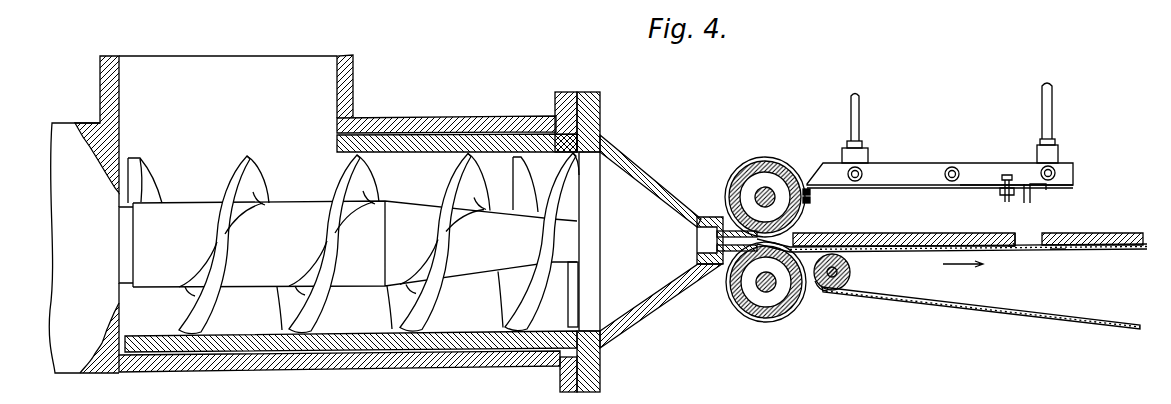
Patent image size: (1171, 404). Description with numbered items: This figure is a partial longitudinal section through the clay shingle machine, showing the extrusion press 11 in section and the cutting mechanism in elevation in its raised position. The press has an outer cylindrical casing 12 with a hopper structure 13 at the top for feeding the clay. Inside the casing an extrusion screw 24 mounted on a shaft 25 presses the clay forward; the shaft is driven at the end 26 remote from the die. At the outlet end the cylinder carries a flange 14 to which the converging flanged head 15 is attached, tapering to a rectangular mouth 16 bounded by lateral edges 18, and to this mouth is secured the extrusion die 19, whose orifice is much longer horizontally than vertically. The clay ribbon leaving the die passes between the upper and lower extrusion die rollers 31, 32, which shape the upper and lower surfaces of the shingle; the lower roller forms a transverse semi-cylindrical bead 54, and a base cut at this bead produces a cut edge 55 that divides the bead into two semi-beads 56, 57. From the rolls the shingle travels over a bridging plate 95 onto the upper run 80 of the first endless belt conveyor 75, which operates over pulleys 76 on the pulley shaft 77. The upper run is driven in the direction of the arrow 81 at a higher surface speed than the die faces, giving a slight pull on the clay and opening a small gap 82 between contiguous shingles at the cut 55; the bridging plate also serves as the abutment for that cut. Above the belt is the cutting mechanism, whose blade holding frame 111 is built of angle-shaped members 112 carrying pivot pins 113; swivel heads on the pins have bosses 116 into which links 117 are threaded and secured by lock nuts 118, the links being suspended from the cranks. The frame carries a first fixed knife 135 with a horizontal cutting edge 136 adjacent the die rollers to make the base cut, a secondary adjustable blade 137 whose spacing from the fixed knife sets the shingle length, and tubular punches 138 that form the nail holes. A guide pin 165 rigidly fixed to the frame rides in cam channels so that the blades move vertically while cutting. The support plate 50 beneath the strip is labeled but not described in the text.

The extrusion press 11 is at (448, 110).
The outer cylindrical casing 12 is at (440, 366).
The hopper structure 13 is at (278, 74).
The flange 14 is at (562, 376).
The converging flanged head 15 is at (652, 190).
The rectangular mouth 16 is at (708, 271).
The lateral edges 18 is at (697, 238).
The extrusion die 19 is at (718, 218).
The extrusion screw 24 is at (302, 336).
The shaft 25 is at (125, 240).
The end 26 is at (77, 318).
The upper extrusion die roller 31 is at (790, 159).
The lower extrusion die roller 32 is at (748, 316).
The support plate 50 is at (919, 229).
The transverse semi-cylindrical bead 54 is at (766, 282).
The cut edge 55 is at (1017, 243).
The semi-bead 56 is at (1058, 250).
The semi-bead 57 is at (1008, 247).
The first endless belt conveyor 75 is at (1038, 311).
The pulleys 76 is at (850, 270).
The pulley shaft 77 is at (838, 273).
The upper run 80 is at (1113, 251).
The arrow 81 is at (953, 267).
The gap 82 is at (1018, 233).
The bridging plate 95 is at (822, 289).
The blade holding frame 111 is at (983, 160).
The angle-shaped members 112 is at (990, 173).
The pivot pins 113 is at (862, 172).
The boss 116 is at (863, 158).
The link 117 is at (857, 115).
The lock nuts 118 is at (861, 145).
The first fixed knife 135 is at (810, 194).
The horizontal cutting edge 136 is at (810, 203).
The secondary adjustable blade 137 is at (1031, 197).
The punches 138 is at (1004, 189).
The guide pin 165 is at (955, 167).